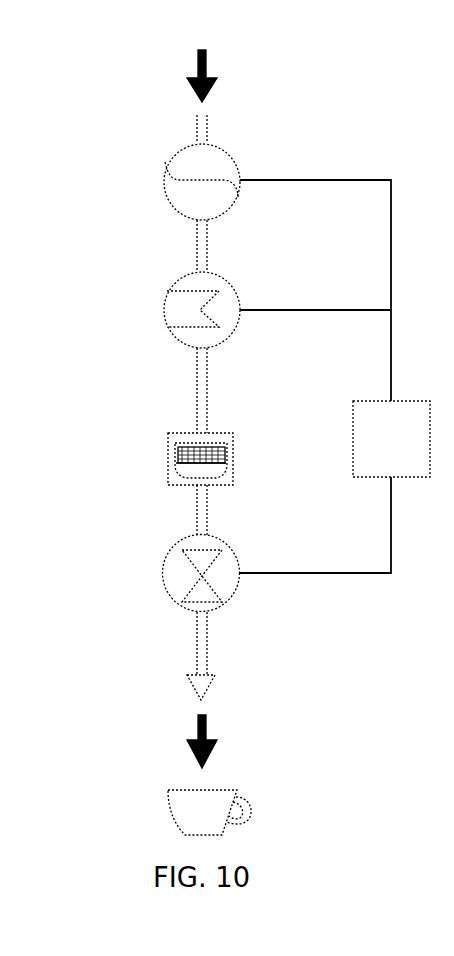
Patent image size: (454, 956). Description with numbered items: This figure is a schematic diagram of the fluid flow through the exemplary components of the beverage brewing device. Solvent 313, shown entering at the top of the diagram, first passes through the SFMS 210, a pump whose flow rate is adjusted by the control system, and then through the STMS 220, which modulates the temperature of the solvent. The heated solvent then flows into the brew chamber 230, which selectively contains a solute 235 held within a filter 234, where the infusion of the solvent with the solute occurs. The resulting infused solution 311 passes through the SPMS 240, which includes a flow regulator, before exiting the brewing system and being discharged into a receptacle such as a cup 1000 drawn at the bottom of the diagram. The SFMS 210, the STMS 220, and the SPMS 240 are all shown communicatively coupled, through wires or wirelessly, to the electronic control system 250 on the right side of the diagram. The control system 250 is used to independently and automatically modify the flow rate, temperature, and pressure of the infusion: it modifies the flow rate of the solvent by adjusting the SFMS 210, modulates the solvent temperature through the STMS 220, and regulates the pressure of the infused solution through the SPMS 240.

The solvent 313 is at (217, 82).
The SFMS 210 is at (163, 165).
The STMS 220 is at (167, 286).
The brew chamber 230 is at (175, 433).
The solute 235 is at (177, 448).
The filter 234 is at (182, 478).
The SPMS 240 is at (167, 597).
The control system 250 is at (335, 376).
The infused solution 311 is at (207, 723).
The cup 1000 is at (240, 795).